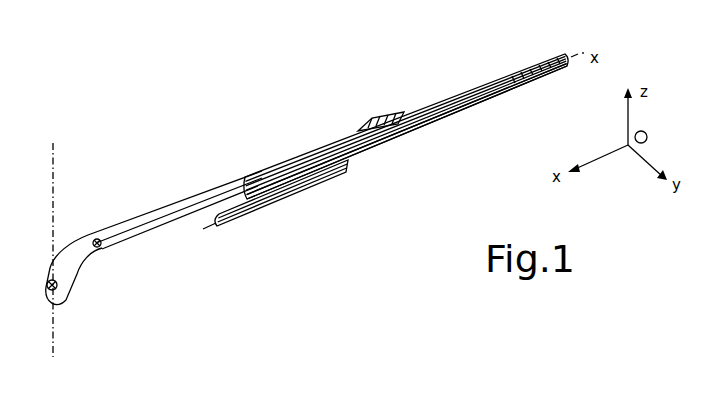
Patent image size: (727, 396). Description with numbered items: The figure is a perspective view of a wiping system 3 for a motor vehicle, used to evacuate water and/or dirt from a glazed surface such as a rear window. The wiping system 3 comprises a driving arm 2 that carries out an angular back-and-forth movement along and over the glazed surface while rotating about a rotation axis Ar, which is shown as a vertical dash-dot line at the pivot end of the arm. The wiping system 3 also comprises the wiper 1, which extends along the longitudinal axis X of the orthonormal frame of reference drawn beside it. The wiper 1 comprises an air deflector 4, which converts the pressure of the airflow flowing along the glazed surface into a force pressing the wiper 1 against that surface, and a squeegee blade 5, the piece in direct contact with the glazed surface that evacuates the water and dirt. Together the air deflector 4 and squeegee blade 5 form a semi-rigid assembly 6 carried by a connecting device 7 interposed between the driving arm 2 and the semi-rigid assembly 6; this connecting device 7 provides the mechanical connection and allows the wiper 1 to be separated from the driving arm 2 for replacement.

The wiper 1 is at (448, 90).
The driving arm 2 is at (202, 193).
The wiping system 3 is at (305, 119).
The air deflector 4 is at (505, 78).
The squeegee blade 5 is at (506, 84).
The semi-rigid assembly 6 is at (291, 194).
The connecting device 7 is at (383, 112).
The rotation axis Ar is at (52, 240).